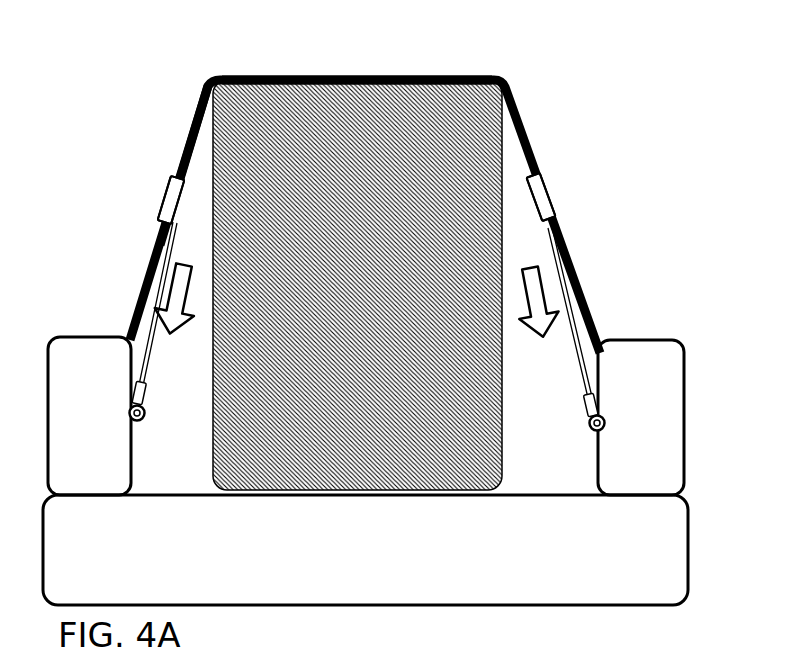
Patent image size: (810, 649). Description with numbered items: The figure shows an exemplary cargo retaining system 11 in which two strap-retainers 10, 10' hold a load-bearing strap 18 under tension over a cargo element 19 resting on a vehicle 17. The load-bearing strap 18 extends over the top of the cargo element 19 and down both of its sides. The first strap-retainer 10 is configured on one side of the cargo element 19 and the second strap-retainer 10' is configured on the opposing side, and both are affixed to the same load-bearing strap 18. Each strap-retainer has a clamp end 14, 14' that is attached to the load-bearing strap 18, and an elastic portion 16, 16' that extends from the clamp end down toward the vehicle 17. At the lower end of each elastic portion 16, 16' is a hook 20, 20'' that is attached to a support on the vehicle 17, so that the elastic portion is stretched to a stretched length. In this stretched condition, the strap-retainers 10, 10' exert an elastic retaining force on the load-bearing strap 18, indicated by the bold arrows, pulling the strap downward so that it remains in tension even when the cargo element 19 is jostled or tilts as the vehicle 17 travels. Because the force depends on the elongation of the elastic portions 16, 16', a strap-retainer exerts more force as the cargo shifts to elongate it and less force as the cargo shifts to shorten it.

The strap-retainer 10 is at (138, 185).
The second strap-retainer 10' is at (587, 174).
The cargo retaining system 11 is at (527, 131).
The clamp end 14 is at (133, 200).
The clamp end of second strap-retainer 14' is at (584, 197).
The elastic portion 16 is at (131, 304).
The elastic portion of second strap-retainer 16' is at (597, 312).
The vehicle 17 is at (53, 336).
The load-bearing strap 18 is at (190, 120).
The cargo element 19 is at (266, 75).
The hook 20 is at (170, 409).
The hook of second strap-retainer 20'' is at (566, 412).